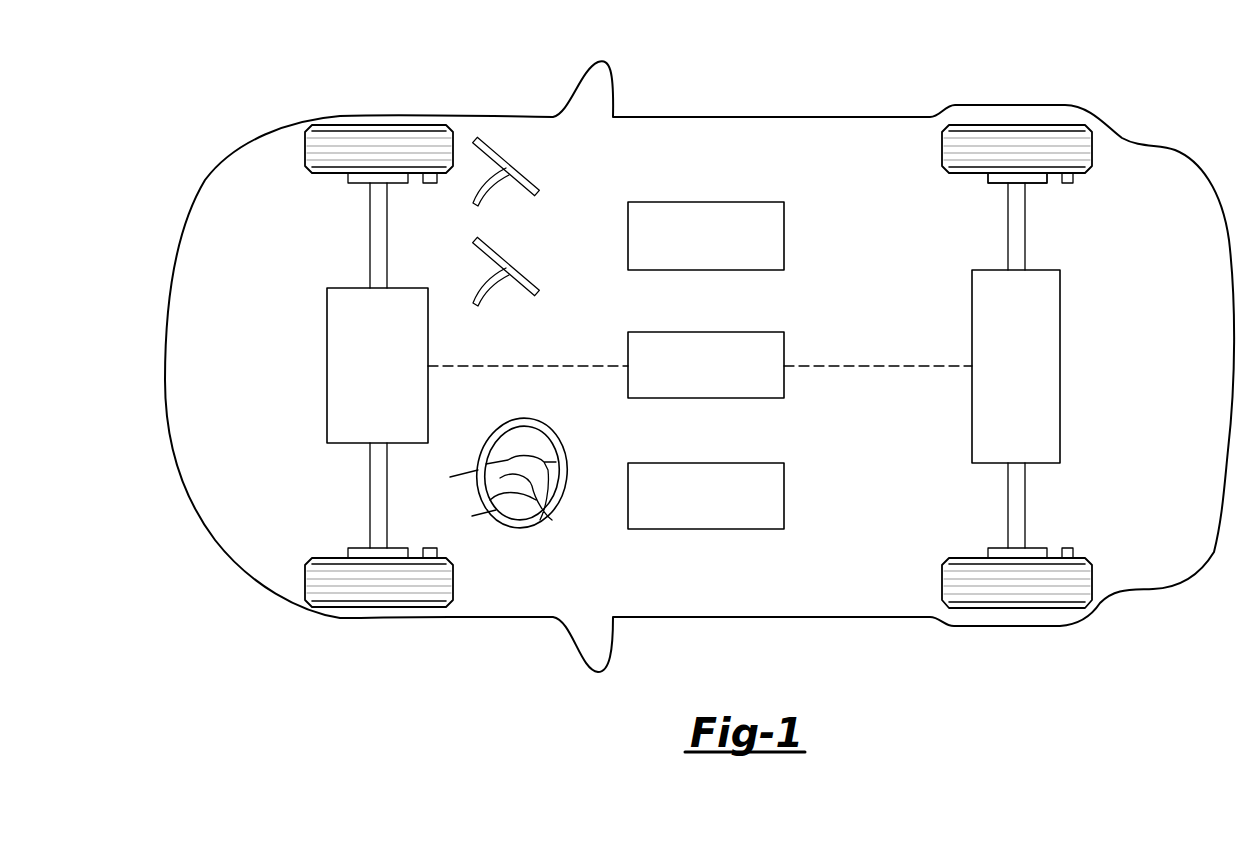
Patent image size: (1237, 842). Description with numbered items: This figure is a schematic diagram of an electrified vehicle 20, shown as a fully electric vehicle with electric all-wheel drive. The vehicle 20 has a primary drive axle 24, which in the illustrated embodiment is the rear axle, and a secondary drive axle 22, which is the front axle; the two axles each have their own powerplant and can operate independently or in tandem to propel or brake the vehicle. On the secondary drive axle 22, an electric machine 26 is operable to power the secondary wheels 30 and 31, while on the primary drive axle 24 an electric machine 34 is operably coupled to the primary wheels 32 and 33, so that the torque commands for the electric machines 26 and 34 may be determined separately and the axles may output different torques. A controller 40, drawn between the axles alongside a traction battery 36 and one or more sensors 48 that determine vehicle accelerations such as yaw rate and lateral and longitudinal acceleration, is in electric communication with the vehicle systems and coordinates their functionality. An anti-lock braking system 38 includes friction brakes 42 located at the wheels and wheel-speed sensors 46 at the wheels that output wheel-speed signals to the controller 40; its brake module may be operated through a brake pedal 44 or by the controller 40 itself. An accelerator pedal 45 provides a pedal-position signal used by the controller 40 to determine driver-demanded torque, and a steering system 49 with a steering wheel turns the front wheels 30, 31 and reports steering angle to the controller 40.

The electrified vehicle 20 is at (770, 117).
The secondary drive axle 22 is at (298, 300).
The primary drive axle 24 is at (1083, 323).
The electric machine 26 is at (384, 346).
The secondary wheel 30 is at (370, 607).
The secondary wheel 31 is at (378, 125).
The primary wheel 32 is at (1017, 608).
The primary wheel 33 is at (1017, 125).
The electric machine 34 is at (1022, 374).
The traction battery 36 is at (784, 345).
The anti-lock braking system 38 is at (1062, 228).
The controller 40 is at (705, 202).
The friction brake 42 is at (997, 183).
The brake pedal 44 is at (530, 276).
The accelerator pedal 45 is at (530, 178).
The wheel-speed sensor 46 is at (1068, 183).
The sensors 48 is at (705, 530).
The steering system 49 is at (530, 415).